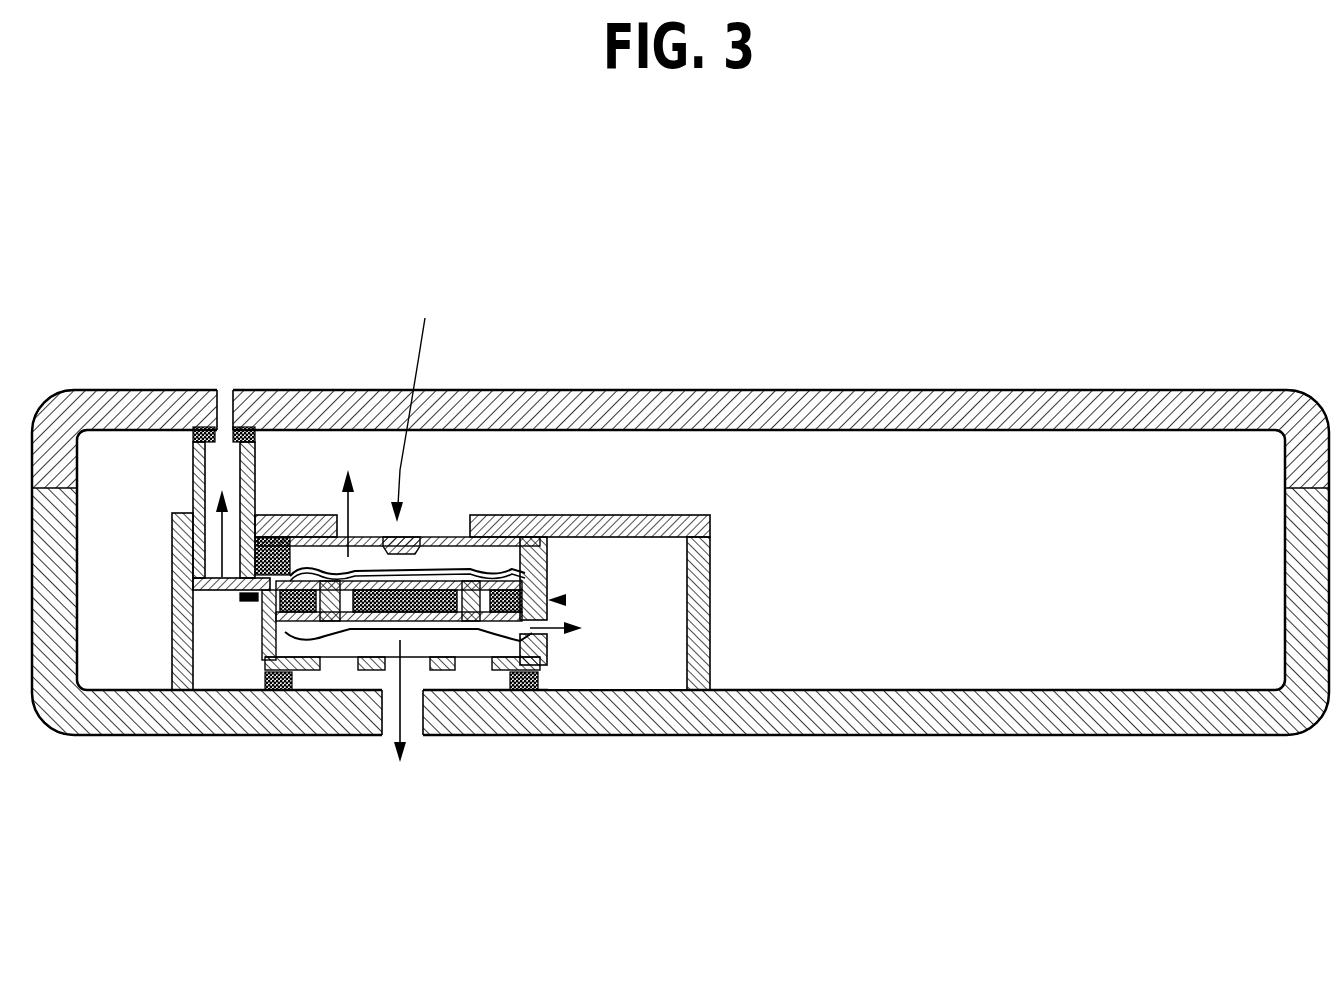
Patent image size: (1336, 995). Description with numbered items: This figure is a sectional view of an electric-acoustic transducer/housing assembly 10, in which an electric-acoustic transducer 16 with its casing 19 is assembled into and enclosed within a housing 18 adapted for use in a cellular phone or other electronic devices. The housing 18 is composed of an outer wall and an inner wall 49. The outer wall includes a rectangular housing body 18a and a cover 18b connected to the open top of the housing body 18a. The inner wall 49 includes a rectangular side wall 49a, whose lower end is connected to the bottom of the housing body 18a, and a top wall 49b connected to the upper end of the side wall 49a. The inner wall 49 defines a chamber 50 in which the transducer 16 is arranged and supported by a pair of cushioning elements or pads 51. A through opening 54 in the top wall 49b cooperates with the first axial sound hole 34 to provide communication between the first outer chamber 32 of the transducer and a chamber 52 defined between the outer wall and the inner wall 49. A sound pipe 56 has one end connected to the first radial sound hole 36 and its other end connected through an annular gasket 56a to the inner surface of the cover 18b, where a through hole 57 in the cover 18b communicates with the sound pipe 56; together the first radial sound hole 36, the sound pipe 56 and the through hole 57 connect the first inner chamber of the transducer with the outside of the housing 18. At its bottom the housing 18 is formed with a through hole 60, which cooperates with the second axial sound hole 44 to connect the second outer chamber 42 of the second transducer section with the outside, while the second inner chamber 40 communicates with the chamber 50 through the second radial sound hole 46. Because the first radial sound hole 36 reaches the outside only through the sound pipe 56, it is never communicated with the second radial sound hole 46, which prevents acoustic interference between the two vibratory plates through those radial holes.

The electric-acoustic transducer/housing assembly 10 is at (869, 250).
The electric-acoustic transducer 16 is at (686, 786).
The housing 18 is at (327, 378).
The housing body 18a is at (1127, 735).
The cover 18b is at (1177, 390).
The casing 19 is at (548, 558).
The first outer chamber 32 is at (490, 545).
The first axial sound hole 34 is at (363, 540).
The first radial sound hole 36 is at (246, 600).
The second inner chamber 40 is at (450, 630).
The second outer chamber 42 is at (478, 640).
The second axial sound hole 44 is at (338, 670).
The second radial sound hole 46 is at (548, 634).
The inner wall 49 is at (607, 500).
The side wall 49a is at (712, 548).
The top wall 49b is at (648, 515).
The chamber 50 is at (683, 602).
The cushioning elements or pads 51 is at (285, 672).
The chamber 52 is at (987, 500).
The through opening 54 is at (483, 540).
The sound pipe 56 is at (257, 460).
The annular gasket 56a is at (193, 437).
The through hole 57 is at (225, 390).
The through hole 60 is at (412, 715).